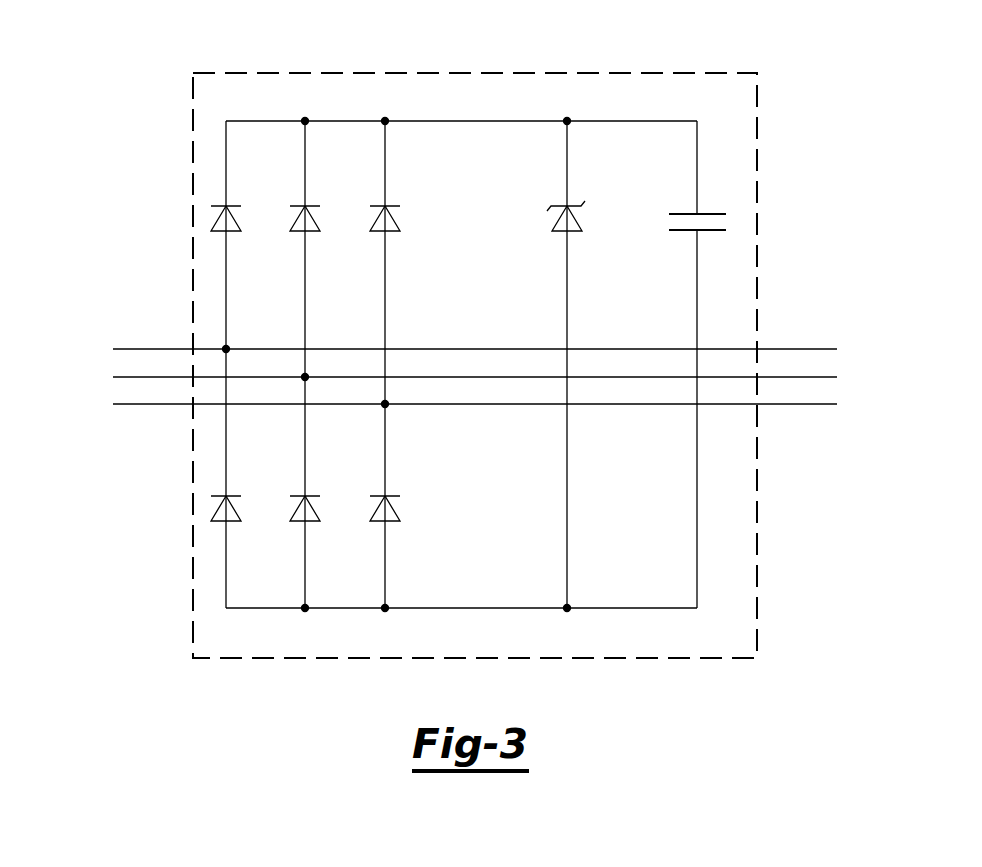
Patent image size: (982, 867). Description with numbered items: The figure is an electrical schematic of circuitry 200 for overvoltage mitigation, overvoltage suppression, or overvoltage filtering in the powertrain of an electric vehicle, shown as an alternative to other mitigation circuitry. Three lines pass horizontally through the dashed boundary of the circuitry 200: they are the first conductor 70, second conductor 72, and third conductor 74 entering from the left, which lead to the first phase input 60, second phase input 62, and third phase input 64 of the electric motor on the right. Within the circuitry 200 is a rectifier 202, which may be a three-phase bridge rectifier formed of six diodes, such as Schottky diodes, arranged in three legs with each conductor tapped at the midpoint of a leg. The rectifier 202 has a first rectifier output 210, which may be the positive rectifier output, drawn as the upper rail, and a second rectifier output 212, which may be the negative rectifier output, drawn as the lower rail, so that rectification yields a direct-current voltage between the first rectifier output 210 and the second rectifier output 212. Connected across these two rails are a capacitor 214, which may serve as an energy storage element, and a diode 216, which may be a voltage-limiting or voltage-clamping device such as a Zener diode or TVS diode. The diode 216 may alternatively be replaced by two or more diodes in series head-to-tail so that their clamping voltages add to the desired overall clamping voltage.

The circuitry 200 is at (490, 72).
The rectifier 202 is at (327, 96).
The first rectifier output 210 is at (410, 120).
The second rectifier output 212 is at (461, 607).
The capacitor 214 is at (688, 232).
The diode 216 is at (556, 221).
The first phase input 60 is at (837, 348).
The second phase input 62 is at (837, 376).
The third phase input 64 is at (837, 403).
The first conductor 70 is at (114, 348).
The second conductor 72 is at (114, 376).
The third conductor 74 is at (114, 403).